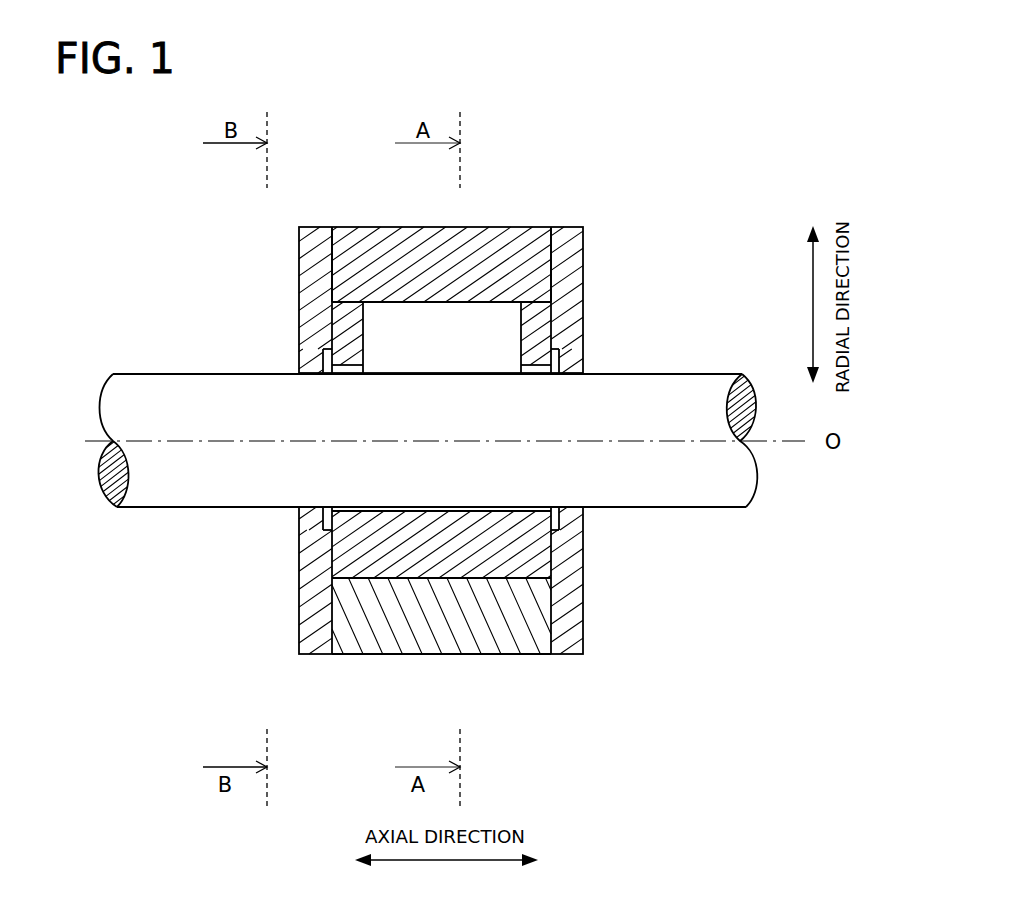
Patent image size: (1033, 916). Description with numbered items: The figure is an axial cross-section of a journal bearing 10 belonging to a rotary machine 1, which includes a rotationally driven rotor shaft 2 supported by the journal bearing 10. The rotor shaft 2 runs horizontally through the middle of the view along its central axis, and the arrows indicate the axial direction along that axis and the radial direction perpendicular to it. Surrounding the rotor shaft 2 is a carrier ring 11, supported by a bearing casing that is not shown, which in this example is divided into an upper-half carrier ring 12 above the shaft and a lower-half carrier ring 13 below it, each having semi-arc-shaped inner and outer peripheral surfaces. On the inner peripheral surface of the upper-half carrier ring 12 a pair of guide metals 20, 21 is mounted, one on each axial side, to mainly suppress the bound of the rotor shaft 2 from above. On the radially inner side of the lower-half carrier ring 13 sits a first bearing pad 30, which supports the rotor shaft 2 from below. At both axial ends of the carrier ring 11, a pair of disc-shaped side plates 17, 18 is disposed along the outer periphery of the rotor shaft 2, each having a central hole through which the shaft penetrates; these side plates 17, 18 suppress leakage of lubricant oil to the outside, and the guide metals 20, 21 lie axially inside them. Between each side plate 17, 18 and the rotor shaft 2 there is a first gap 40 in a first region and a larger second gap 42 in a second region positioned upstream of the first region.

The rotary machine 1 is at (650, 106).
The rotor shaft 2 is at (708, 387).
The journal bearing 10 is at (636, 263).
The carrier ring 11 is at (510, 247).
The upper-half carrier ring 12 is at (343, 266).
The lower-half carrier ring 13 is at (443, 640).
The side plate 17 is at (305, 330).
The side plate 18 is at (583, 312).
The guide metal 20 is at (355, 345).
The guide metal 21 is at (530, 345).
The first bearing pad 30 is at (533, 557).
The first gap 40 is at (583, 510).
The second gap 42 is at (583, 368).